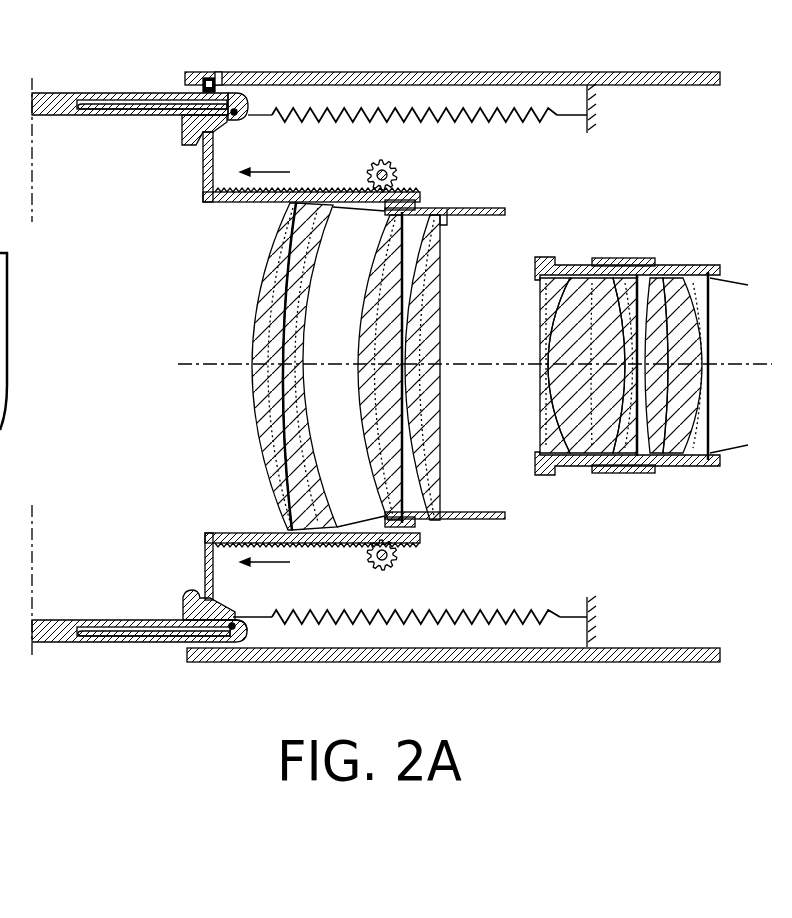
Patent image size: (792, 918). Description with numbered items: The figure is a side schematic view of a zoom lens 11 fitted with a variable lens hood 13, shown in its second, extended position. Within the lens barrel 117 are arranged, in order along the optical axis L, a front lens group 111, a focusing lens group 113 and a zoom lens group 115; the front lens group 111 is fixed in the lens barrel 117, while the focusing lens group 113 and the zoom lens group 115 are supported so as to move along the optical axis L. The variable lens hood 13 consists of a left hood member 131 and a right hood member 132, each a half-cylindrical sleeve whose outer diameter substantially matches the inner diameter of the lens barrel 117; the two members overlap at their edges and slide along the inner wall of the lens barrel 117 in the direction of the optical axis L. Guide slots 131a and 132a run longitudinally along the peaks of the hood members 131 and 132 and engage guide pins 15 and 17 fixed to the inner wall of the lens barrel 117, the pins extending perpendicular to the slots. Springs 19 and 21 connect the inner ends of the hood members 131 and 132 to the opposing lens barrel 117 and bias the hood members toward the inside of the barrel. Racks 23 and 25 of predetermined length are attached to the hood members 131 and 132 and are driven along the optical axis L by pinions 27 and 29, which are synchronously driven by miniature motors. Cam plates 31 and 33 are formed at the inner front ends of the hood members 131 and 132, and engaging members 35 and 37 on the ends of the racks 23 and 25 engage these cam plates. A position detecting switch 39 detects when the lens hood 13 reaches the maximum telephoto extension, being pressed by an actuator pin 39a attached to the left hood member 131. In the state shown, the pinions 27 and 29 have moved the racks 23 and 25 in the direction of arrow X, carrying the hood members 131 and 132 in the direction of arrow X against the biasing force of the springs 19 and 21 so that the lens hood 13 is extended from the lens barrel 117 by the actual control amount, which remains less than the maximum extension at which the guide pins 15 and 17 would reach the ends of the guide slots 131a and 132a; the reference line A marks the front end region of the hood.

The zoom lens 11 is at (731, 275).
The variable lens hood 13 is at (136, 87).
The guide pin 15 is at (236, 93).
The guide pin 17 is at (232, 648).
The spring 19 is at (490, 124).
The spring 21 is at (430, 612).
The rack 23 is at (313, 193).
The rack 25 is at (232, 533).
The pinion 27 is at (398, 172).
The pinion 29 is at (370, 558).
The cam plate 31 is at (186, 130).
The cam plate 33 is at (183, 598).
The engaging member 35 is at (203, 178).
The engaging member 37 is at (205, 549).
The position detecting switch 39 is at (209, 78).
The actuator pin 39a is at (219, 80).
The front lens group 111 is at (263, 422).
The focusing lens group 113 is at (435, 332).
The zoom lens group 115 is at (721, 242).
The lens barrel 117 is at (514, 51).
The left hood member 131 is at (80, 70).
The guide slot 131a is at (105, 110).
The right hood member 132 is at (80, 598).
The guide slot 132a is at (120, 642).
The reference plane A is at (20, 367).
The optical axis L is at (727, 363).
The arrow X is at (265, 368).